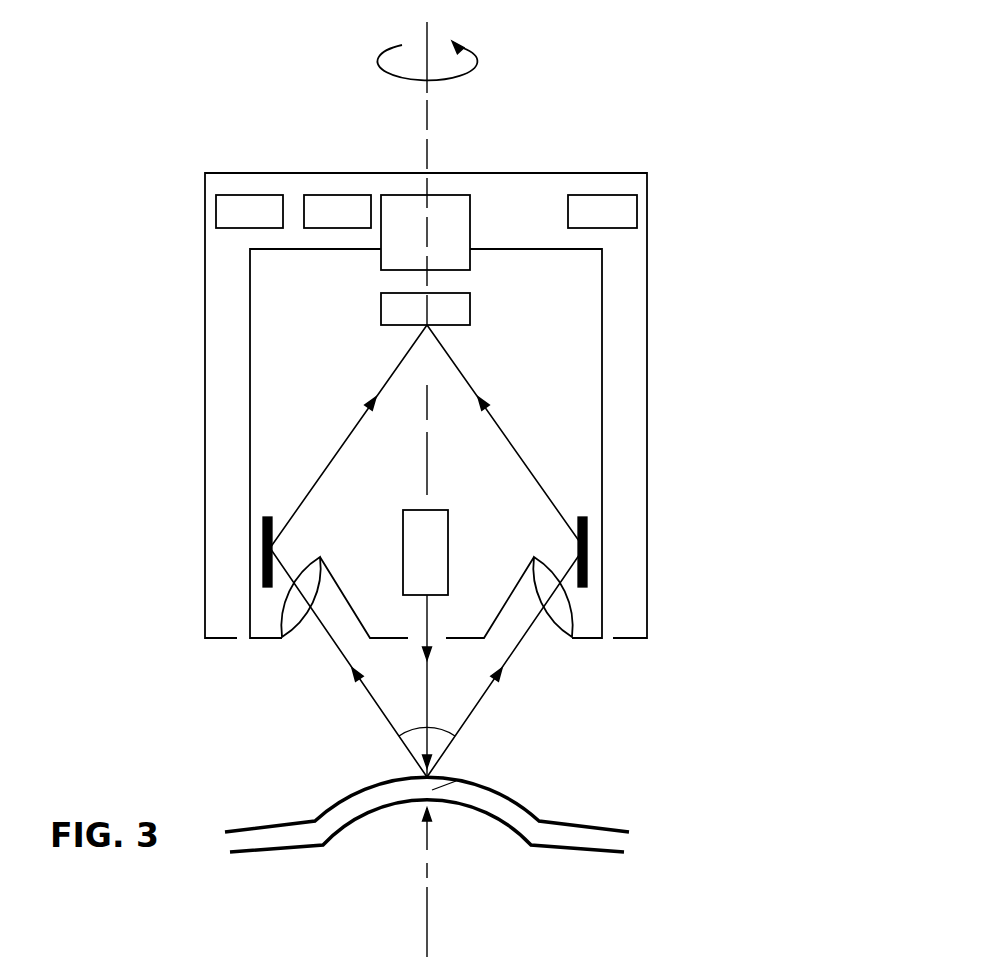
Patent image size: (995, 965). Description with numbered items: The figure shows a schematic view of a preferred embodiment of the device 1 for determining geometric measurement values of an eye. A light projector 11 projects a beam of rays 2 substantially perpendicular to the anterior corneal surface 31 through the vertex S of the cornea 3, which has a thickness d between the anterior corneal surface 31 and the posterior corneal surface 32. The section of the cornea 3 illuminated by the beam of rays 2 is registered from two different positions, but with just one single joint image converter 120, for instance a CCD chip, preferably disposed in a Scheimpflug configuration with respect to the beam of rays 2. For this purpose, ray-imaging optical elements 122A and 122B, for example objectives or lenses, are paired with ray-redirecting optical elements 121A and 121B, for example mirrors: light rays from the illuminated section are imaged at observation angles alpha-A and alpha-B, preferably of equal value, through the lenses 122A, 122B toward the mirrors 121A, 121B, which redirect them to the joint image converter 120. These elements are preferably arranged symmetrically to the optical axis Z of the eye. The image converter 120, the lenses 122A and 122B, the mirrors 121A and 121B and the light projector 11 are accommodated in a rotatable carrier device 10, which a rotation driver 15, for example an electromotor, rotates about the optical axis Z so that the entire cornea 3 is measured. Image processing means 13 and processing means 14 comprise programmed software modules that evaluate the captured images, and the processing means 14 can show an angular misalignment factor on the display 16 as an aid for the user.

The device for determining geometric measurement values of an eye 1 is at (180, 395).
The beam of rays 2 is at (423, 685).
The cornea 3 is at (431, 825).
The rotatable carrier device 10 is at (593, 392).
The light projector 11 is at (440, 545).
The image processing means 13 is at (245, 212).
The processing means 14 is at (342, 198).
The rotation driver 15 is at (457, 208).
The display 16 is at (617, 208).
The joint image converter 120 is at (460, 308).
The ray-redirecting optical element 121A is at (263, 565).
The ray-redirecting optical element 121B is at (587, 553).
The ray-imaging optical element 122A is at (295, 608).
The ray-imaging optical element 122B is at (559, 608).
The anterior corneal surface 31 is at (503, 797).
The posterior corneal surface 32 is at (368, 810).
The vertex of the cornea S is at (431, 771).
The thickness of the cornea d is at (445, 786).
The optical axis of the eye Z is at (430, 32).